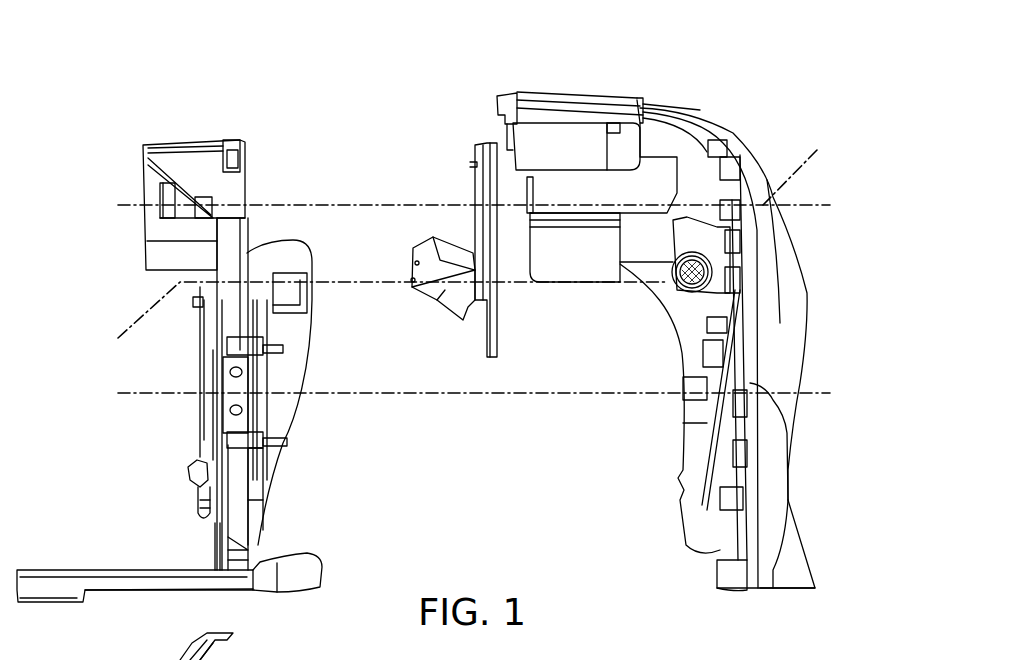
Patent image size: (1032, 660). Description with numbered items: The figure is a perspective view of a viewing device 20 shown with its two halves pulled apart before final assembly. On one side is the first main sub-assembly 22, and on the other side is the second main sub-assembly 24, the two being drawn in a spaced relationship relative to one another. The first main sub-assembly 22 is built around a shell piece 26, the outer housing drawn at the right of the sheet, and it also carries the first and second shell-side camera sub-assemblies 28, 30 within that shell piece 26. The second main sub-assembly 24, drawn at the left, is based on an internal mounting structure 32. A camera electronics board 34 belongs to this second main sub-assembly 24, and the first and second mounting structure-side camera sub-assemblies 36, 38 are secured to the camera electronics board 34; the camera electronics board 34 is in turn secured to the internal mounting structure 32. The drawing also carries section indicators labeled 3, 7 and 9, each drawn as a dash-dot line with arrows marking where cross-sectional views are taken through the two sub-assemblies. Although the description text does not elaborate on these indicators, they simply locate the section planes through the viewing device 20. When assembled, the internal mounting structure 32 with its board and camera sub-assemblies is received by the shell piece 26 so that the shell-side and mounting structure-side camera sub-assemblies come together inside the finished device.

The viewing device 20 is at (205, 55).
The first main sub-assembly 22 is at (745, 55).
The second main sub-assembly 24 is at (135, 158).
The shell piece 26 is at (787, 257).
The first shell-side camera sub-assembly 28 is at (790, 188).
The second shell-side camera sub-assembly 30 is at (678, 310).
The internal mounting structure 32 is at (163, 234).
The camera electronics board 34 is at (453, 305).
The first mounting structure-side camera sub-assembly 36 is at (462, 185).
The second mounting structure-side camera sub-assembly 38 is at (423, 233).
The section line 3 is at (118, 168).
The section line 7 is at (107, 328).
The section line 9 is at (118, 357).